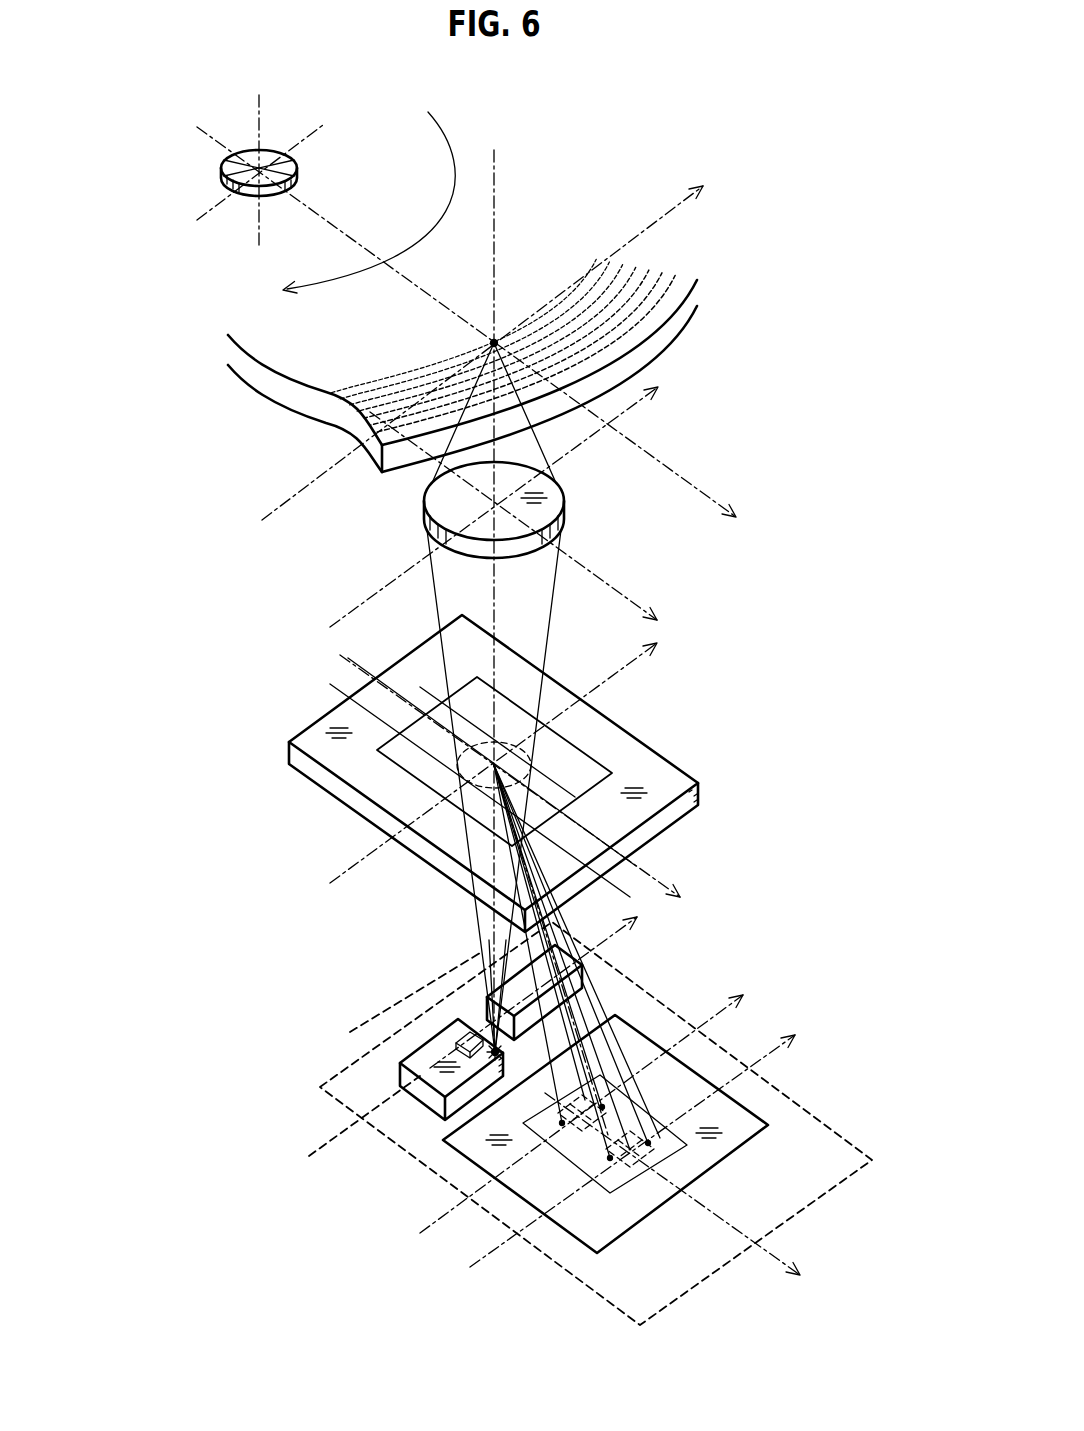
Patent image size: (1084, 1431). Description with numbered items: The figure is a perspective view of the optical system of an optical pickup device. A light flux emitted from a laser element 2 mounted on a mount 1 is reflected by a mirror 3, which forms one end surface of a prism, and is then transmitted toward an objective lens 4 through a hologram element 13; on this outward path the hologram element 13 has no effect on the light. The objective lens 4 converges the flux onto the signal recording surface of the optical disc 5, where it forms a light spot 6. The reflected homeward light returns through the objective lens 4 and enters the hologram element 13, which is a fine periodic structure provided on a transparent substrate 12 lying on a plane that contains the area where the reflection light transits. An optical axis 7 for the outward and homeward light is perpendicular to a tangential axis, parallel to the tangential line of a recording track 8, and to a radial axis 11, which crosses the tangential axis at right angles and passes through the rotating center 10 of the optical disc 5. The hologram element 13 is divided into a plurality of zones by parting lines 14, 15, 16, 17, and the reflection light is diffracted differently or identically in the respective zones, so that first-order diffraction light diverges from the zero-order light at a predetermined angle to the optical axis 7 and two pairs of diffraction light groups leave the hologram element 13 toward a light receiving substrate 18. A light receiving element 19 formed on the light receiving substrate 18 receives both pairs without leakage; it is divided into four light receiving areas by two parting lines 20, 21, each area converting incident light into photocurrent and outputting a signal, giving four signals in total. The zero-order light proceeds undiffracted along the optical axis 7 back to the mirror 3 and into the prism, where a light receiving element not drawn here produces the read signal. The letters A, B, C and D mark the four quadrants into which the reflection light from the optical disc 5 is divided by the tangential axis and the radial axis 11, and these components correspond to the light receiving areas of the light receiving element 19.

The mount 1 is at (414, 1088).
The laser element 2 is at (455, 1038).
The mirror 3 is at (480, 1012).
The objective lens 4 is at (422, 515).
The optical disc 5 is at (683, 332).
The light spot 6 is at (483, 343).
The optical axis 7 is at (497, 168).
The recording track 8 is at (668, 218).
The rotating center 10 is at (262, 108).
The radial axis 11 is at (670, 474).
The transparent substrate 12 is at (335, 760).
The hologram element 13 is at (453, 808).
The parting line 14 is at (553, 745).
The parting line 15 is at (427, 733).
The parting line 16 is at (443, 710).
The parting line 17 is at (440, 743).
The light receiving substrate 18 is at (650, 1012).
The light receiving element 19 is at (520, 1120).
The parting line 20 is at (573, 1144).
The parting line 21 is at (657, 1162).
The quadrant A is at (550, 512).
The quadrant B is at (512, 473).
The quadrant C is at (443, 500).
The quadrant D is at (510, 533).